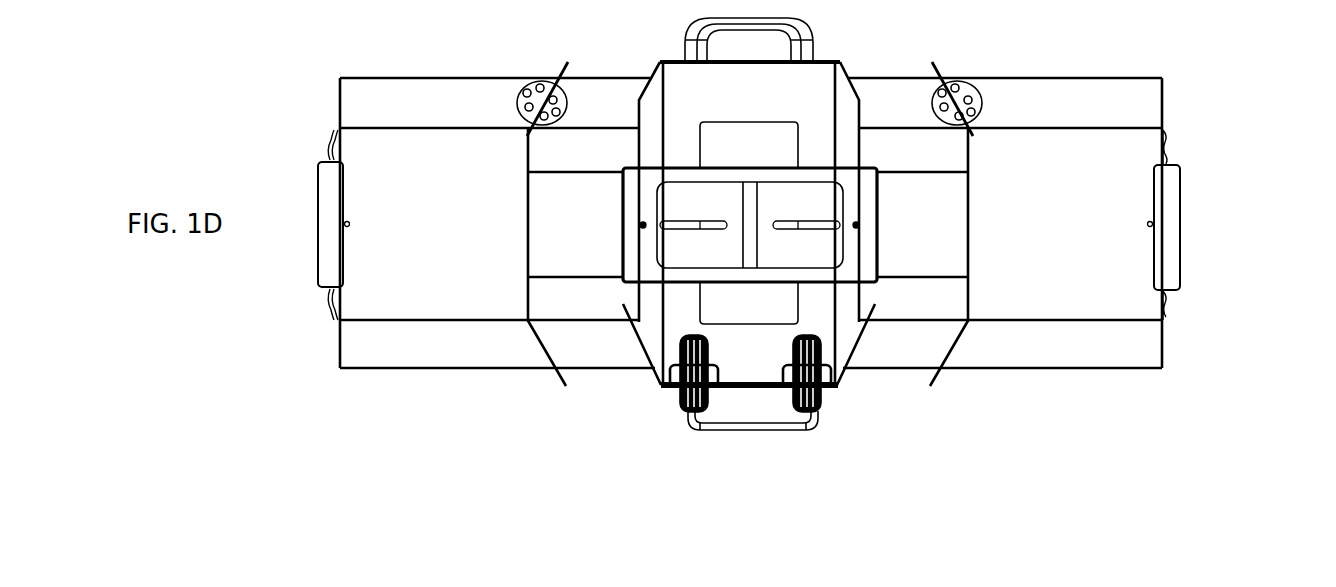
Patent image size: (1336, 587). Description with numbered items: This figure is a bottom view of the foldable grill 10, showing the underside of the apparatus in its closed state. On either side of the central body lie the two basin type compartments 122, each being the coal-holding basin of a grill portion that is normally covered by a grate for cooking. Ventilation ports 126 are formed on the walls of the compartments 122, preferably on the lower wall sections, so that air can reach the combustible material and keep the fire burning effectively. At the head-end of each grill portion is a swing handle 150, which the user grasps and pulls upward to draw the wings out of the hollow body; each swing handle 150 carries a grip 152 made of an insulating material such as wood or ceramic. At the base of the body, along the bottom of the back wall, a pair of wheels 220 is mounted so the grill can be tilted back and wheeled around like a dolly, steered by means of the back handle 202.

The foldable grill 10 is at (264, 344).
The basin type compartment 122 is at (751, 224).
The ventilation ports 126 is at (528, 83).
The swing handles 150 is at (1211, 225).
The grips 152 is at (1173, 258).
The back handle 202 is at (717, 430).
The wheels 220 is at (820, 397).